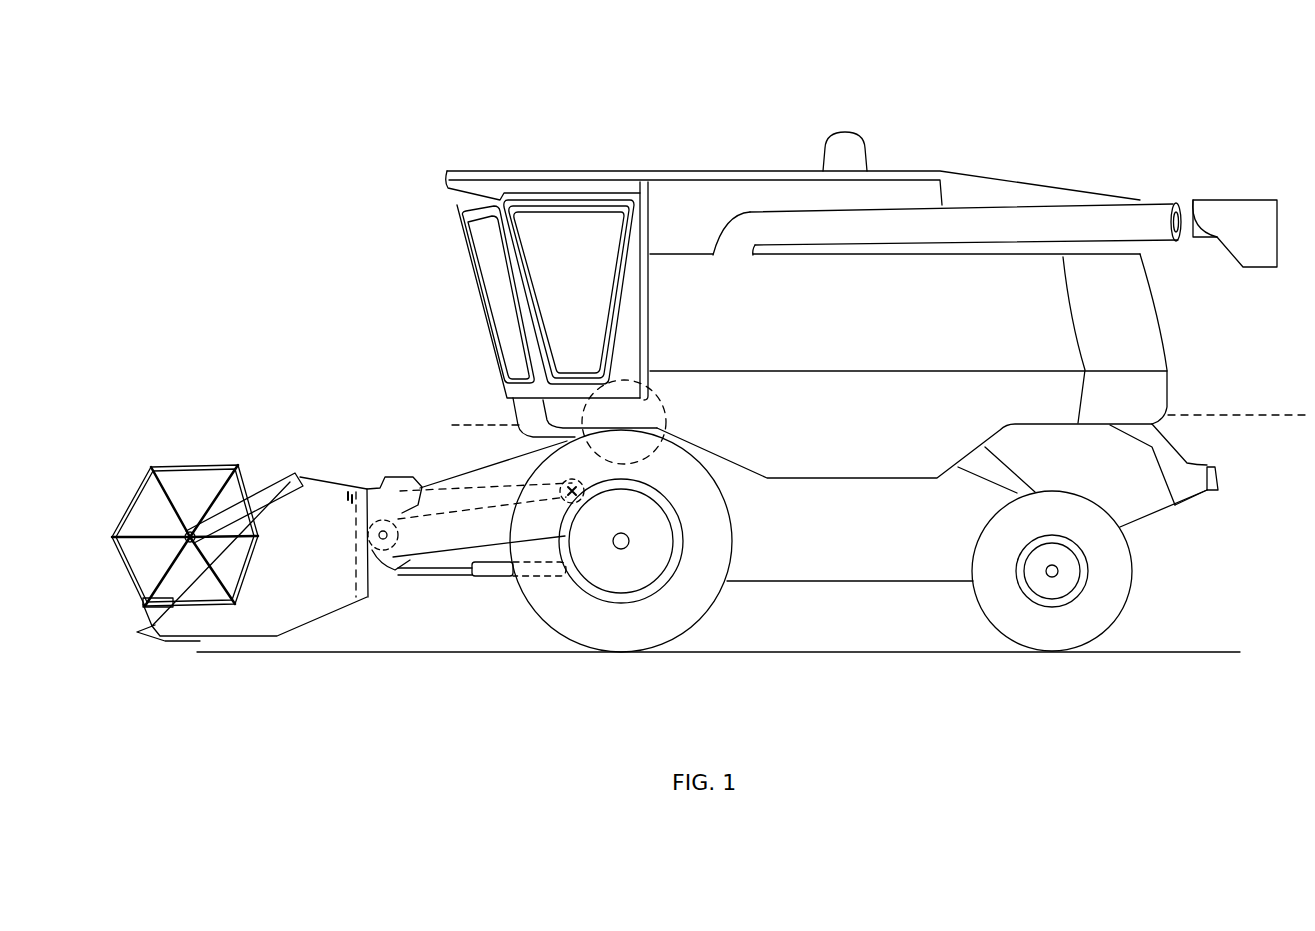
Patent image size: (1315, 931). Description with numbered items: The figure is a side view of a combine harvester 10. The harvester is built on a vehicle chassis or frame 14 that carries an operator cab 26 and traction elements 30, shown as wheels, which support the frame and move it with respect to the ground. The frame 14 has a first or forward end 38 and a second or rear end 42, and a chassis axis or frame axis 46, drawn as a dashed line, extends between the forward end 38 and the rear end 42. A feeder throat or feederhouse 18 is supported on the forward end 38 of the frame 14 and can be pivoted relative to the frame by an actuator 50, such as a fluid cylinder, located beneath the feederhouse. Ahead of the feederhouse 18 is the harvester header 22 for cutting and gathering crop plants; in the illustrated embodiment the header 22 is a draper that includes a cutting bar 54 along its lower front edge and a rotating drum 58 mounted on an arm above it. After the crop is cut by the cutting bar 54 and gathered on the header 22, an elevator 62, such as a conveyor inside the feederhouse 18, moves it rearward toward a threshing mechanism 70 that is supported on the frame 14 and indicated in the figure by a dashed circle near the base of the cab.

The combine harvester 10 is at (912, 109).
The vehicle chassis or frame 14 is at (825, 583).
The feeder throat or feederhouse 18 is at (428, 468).
The harvester header 22 is at (330, 480).
The operator cab 26 is at (487, 323).
The traction elements 30 is at (570, 628).
The first or forward end 38 is at (507, 398).
The second or rear end 42 is at (1167, 363).
The chassis axis or frame axis 46 is at (1222, 416).
The actuator 50 is at (490, 580).
The cutting bar 54 is at (152, 640).
The rotating drum 58 is at (120, 507).
The elevator 62 is at (426, 573).
The threshing mechanism 70 is at (676, 378).